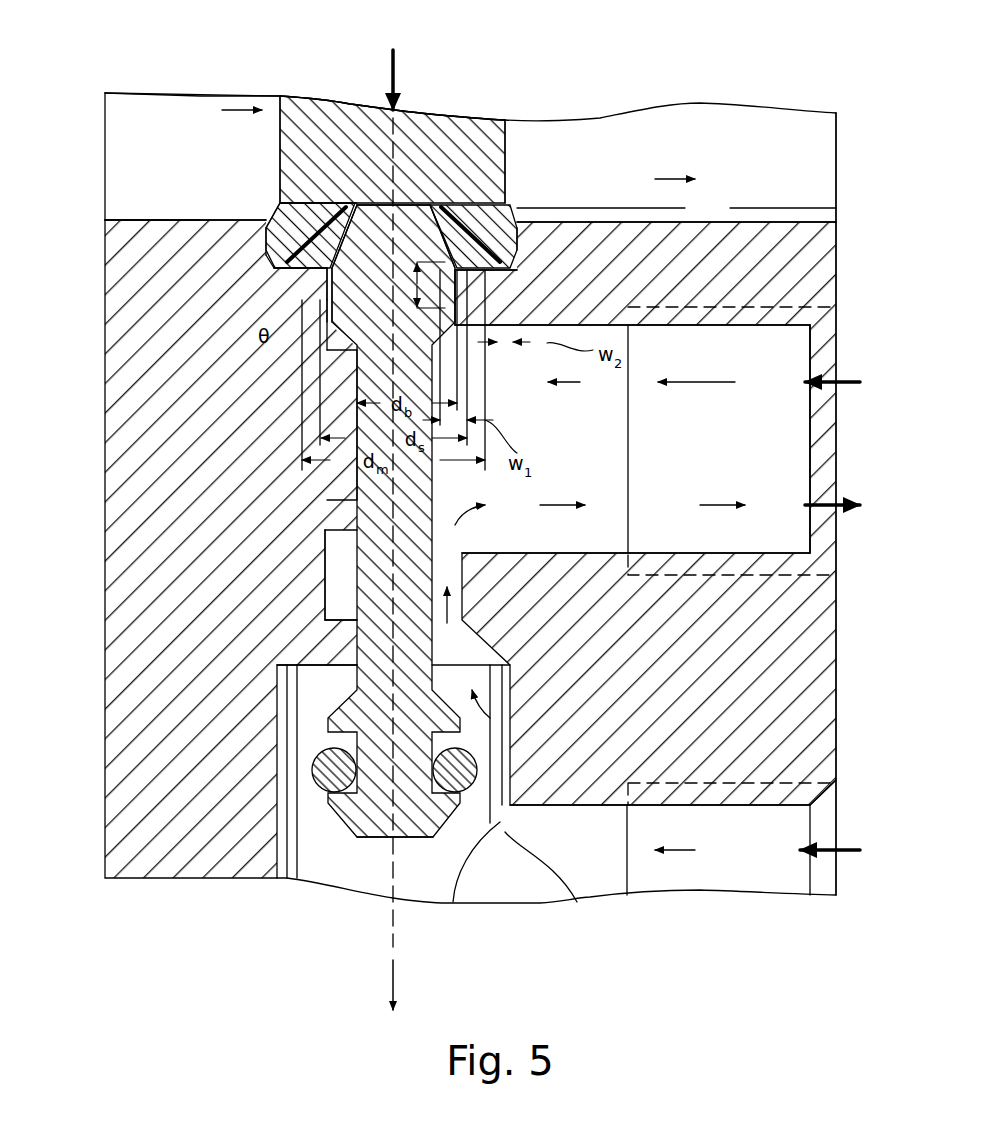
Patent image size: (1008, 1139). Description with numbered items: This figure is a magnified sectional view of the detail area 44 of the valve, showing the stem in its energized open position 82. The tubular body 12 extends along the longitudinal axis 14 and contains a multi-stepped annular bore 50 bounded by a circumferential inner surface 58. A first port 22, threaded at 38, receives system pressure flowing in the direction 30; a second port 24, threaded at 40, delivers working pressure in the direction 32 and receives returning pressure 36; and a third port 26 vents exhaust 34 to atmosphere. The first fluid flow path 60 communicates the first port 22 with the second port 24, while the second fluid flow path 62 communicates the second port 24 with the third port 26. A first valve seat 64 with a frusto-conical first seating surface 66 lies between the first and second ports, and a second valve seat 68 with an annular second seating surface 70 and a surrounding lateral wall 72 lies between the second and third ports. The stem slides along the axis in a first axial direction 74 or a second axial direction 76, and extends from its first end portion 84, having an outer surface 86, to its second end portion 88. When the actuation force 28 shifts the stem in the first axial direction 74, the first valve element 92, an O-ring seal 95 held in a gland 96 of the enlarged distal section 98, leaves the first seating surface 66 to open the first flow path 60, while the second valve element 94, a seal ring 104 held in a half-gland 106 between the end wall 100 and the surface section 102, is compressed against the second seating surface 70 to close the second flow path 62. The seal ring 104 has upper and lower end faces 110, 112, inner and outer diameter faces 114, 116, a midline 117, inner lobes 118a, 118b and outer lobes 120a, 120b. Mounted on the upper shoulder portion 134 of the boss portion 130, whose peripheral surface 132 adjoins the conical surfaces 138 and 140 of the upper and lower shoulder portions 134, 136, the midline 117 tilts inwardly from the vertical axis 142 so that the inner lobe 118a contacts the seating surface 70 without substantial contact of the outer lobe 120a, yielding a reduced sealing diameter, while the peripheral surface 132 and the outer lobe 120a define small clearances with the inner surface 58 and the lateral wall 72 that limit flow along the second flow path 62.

The body 12 is at (105, 880).
The longitudinal axis 14 is at (393, 925).
The first port 22 is at (838, 815).
The second port 24 is at (835, 495).
The third port 26 is at (840, 147).
The actuation force 28 is at (393, 70).
The system pressure flow 30 is at (848, 855).
The working pressure flow 32 is at (848, 512).
The exhaust flow 34 is at (835, 182).
The returning working pressure 36 is at (848, 378).
The first port threads 38 is at (800, 308).
The second port threads 40 is at (836, 590).
The detail area 44 is at (180, 897).
The bore 50 is at (326, 565).
The bore inner surface 58 is at (340, 530).
The first fluid flow path 60 is at (577, 902).
The second fluid flow path 62 is at (570, 385).
The first valve seat 64 is at (312, 665).
The first seating surface 66 is at (320, 628).
The second valve seat 68 is at (272, 205).
The second seating surface 70 is at (300, 300).
The lateral wall 72 is at (268, 252).
The first axial direction 74 is at (393, 972).
The second axial direction 76 is at (402, 118).
The open position 82 is at (160, 155).
The stem first end portion 84 is at (348, 588).
The stem first end outer surface 86 is at (335, 490).
The stem second end portion 88 is at (222, 110).
The first valve element 92 is at (298, 778).
The second valve element 94 is at (225, 232).
The O-ring seal 95 is at (478, 770).
The gland 96 is at (330, 742).
The enlarged distal section 98 is at (313, 840).
The end wall 100 is at (505, 190).
The outer surface section 102 is at (445, 200).
The seal ring 104 is at (505, 212).
The half-gland 106 is at (262, 210).
The upper end face 110 is at (298, 120).
The lower end face 112 is at (290, 330).
The inner diameter face 114 is at (348, 240).
The outer diameter face 116 is at (268, 213).
The midline 117 is at (512, 160).
The inner lobe 118a is at (333, 300).
The inner lobe 118b is at (340, 150).
The outer lobe 120a is at (288, 272).
The outer lobe 120b is at (280, 200).
The boss portion 130 is at (500, 312).
The boss peripheral surface 132 is at (300, 360).
The upper shoulder portion 134 is at (448, 198).
The lower shoulder portion 136 is at (320, 390).
The upper conical surface 138 is at (455, 150).
The lower conical surface 140 is at (300, 430).
The vertical axis 142 is at (312, 112).